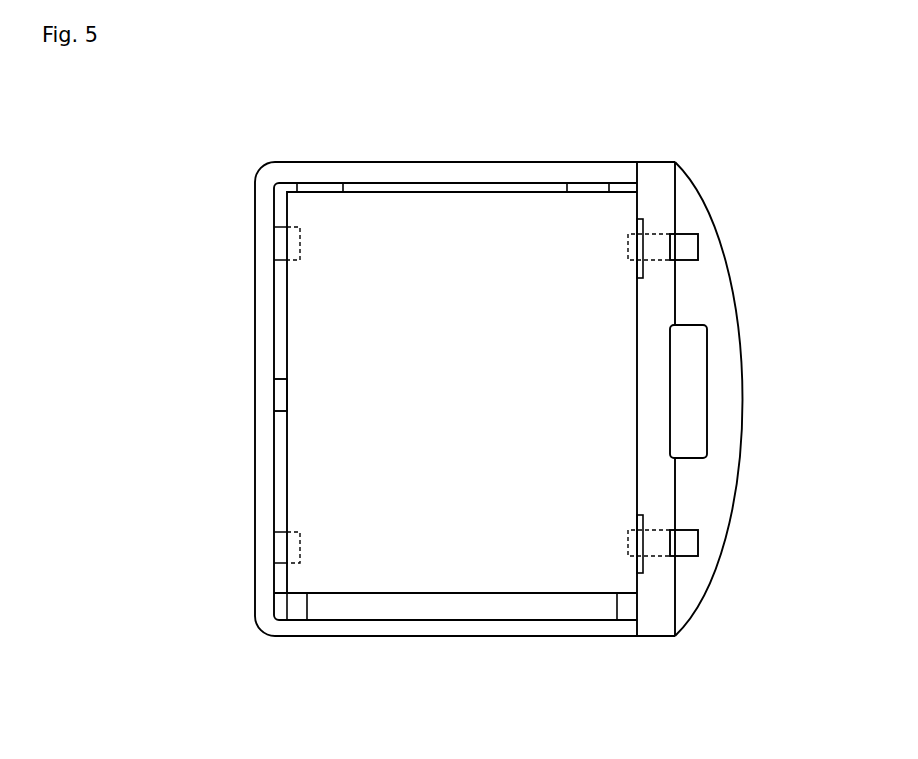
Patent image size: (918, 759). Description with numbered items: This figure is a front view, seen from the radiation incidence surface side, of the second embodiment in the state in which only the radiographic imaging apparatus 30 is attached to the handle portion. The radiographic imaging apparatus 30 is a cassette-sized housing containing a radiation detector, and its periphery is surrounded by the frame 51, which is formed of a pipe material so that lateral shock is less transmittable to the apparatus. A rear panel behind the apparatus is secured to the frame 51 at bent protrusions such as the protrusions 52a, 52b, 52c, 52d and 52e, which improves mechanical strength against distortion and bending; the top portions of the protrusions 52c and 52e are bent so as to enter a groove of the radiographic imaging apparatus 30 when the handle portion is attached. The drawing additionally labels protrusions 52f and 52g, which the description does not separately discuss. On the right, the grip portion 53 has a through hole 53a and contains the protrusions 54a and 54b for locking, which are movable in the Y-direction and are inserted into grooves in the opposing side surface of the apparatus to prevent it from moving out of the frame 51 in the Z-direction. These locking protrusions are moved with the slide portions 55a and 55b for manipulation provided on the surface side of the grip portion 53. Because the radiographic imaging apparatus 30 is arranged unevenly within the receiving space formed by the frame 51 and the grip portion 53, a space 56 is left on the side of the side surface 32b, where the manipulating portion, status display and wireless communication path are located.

The radiographic imaging apparatus 30 is at (442, 557).
The side surface 32b is at (522, 595).
The frame 51 is at (445, 173).
The protrusion 52a is at (589, 187).
The protrusion 52b is at (323, 187).
The protrusion 52c is at (282, 242).
The protrusion 52d is at (282, 393).
The protrusion 52e is at (282, 555).
The engaging portion 52f is at (296, 605).
The engaging portion 52g is at (633, 607).
The grip portion 53 is at (697, 213).
The through hole 53a is at (705, 410).
The protrusion for locking 54a is at (655, 247).
The protrusion for locking 54b is at (655, 548).
The slide portion for manipulation 55a is at (687, 249).
The slide portion for manipulation 55b is at (687, 543).
The space 56 is at (400, 605).